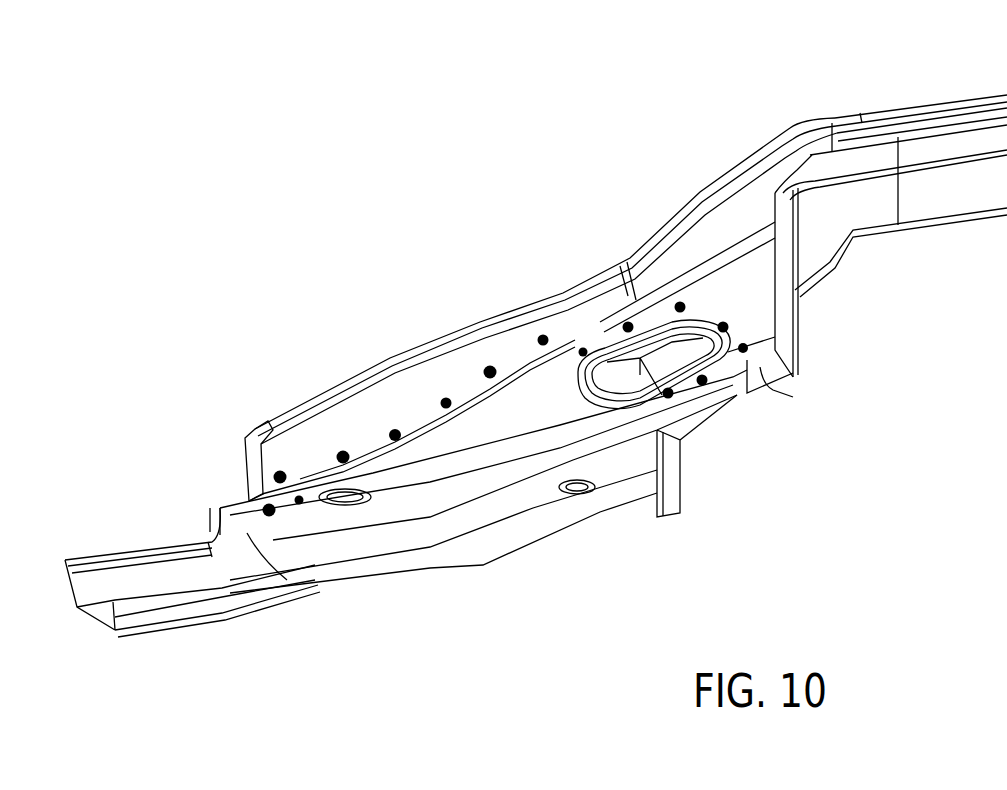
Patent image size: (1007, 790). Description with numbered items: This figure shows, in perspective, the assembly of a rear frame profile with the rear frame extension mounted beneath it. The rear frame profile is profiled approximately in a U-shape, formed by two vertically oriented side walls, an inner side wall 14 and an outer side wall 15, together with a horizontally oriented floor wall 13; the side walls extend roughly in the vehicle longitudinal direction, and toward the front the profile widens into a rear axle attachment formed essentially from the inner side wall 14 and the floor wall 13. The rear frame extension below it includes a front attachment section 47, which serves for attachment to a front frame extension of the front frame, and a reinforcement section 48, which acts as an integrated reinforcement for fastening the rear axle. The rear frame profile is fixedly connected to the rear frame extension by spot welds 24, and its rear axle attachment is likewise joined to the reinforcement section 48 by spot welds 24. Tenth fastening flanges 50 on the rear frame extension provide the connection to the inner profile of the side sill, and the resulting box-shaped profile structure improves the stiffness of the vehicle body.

The floor wall 13 is at (650, 322).
The inner side wall 14 is at (378, 398).
The outer side wall 15 is at (860, 212).
The spot welds 24 is at (666, 398).
The attachment section 47 is at (128, 577).
The reinforcement section 48 is at (580, 520).
The tenth fastening flanges 50 is at (610, 527).